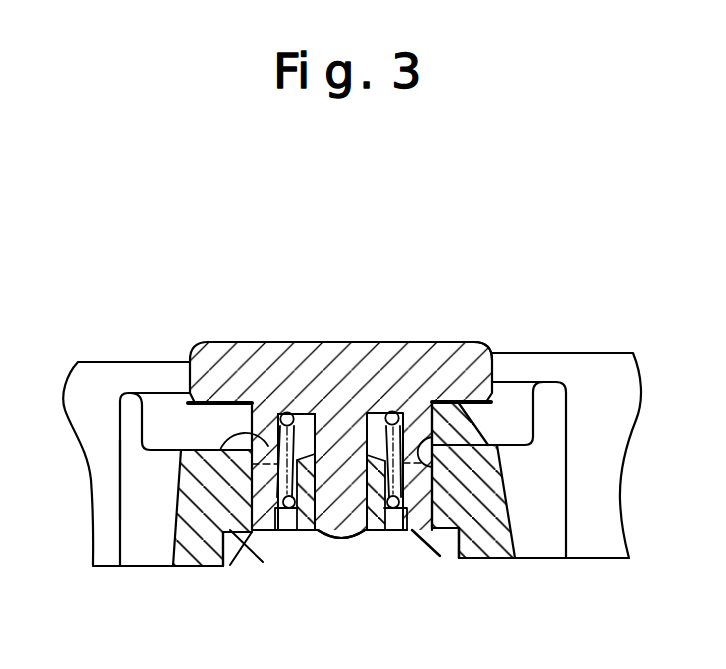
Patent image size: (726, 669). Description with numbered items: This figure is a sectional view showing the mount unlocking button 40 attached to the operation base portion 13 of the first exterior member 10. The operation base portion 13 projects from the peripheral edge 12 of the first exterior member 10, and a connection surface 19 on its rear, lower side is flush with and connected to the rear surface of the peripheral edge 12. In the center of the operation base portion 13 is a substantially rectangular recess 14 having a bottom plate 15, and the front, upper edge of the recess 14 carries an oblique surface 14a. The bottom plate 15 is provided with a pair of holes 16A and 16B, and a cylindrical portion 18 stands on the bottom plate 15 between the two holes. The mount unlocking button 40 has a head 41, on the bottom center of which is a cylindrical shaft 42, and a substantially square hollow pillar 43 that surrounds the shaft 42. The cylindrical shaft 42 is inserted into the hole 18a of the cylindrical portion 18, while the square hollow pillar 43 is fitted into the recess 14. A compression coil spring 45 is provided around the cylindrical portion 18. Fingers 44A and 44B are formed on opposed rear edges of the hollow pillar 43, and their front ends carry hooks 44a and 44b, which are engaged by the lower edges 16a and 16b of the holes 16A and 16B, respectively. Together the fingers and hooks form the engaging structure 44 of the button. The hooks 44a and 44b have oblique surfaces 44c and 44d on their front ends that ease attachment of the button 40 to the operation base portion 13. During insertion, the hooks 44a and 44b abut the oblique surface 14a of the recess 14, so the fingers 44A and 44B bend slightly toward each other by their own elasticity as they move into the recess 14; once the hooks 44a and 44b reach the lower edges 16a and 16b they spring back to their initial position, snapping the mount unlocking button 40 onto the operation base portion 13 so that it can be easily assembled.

The first exterior member 10 is at (545, 350).
The peripheral edge 12 is at (98, 541).
The operation base portion 13 is at (110, 488).
The recess 14 is at (436, 436).
The oblique surface 14a is at (184, 466).
The bottom plate 15 is at (300, 525).
The hole 16A is at (262, 503).
The hole 16B is at (433, 507).
The lower edge of hole 16a is at (197, 567).
The lower edge of hole 16b is at (445, 530).
The cylindrical portion 18 is at (315, 535).
The hole of cylindrical portion 18a is at (358, 533).
The connection surface 19 is at (183, 568).
The mount unlocking button 40 is at (376, 341).
The head 41 is at (452, 341).
The cylindrical shaft 42 is at (337, 538).
The square hollow pillar 43 is at (248, 416).
The terminal fitting 44 is at (433, 440).
The finger 44A is at (282, 533).
The finger 44B is at (399, 533).
The hook 44a is at (233, 533).
The hook 44b is at (436, 530).
The oblique surface 44c is at (238, 560).
The oblique surface 44d is at (438, 557).
The compression coil spring 45 is at (307, 414).